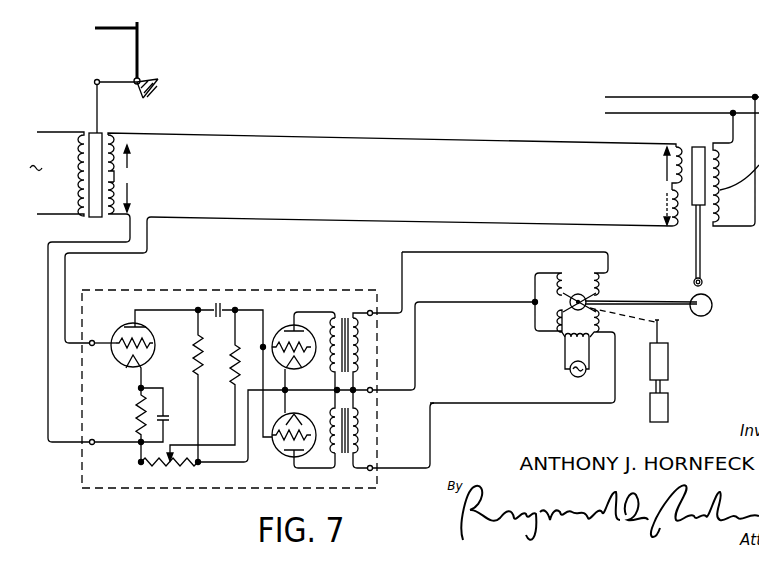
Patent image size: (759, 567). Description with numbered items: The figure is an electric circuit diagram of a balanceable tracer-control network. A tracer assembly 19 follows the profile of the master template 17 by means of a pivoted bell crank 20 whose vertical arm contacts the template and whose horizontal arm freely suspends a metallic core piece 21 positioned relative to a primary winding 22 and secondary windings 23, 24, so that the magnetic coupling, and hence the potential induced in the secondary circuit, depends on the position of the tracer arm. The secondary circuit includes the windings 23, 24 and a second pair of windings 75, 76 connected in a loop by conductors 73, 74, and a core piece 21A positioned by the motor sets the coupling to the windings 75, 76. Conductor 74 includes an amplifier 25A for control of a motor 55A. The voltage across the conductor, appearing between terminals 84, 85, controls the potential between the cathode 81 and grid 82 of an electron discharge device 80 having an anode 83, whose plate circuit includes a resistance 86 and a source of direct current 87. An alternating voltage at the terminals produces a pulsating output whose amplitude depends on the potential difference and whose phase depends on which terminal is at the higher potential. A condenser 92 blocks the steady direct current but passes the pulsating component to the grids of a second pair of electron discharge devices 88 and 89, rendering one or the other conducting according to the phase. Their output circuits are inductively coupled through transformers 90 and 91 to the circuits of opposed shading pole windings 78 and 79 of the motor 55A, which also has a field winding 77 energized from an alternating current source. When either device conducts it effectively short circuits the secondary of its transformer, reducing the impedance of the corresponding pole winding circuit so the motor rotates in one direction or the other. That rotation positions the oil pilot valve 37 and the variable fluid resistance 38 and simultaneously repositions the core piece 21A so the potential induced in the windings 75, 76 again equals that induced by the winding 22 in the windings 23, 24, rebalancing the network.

The master template 17 is at (120, 26).
The pivoted bell crank 20 is at (141, 47).
The tracer assembly 19 is at (69, 126).
The metallic core piece 21 is at (96, 217).
The primary winding 22 is at (73, 181).
The secondary winding 23 is at (126, 144).
The secondary winding 24 is at (124, 182).
The conductor 73 is at (297, 135).
The conductor 74 is at (297, 217).
The winding 75 is at (665, 150).
The winding 76 is at (668, 189).
The core piece 21A is at (695, 210).
The motor 55A is at (614, 296).
The shading pole winding 78 is at (568, 273).
The shading pole winding 79 is at (594, 273).
The field winding 77 is at (563, 345).
The oil pilot valve 37 is at (668, 360).
The variable fluid resistance 38 is at (668, 405).
The amplifier 25A is at (276, 292).
The electron discharge device 80 is at (140, 350).
The cathode 81 is at (136, 362).
The grid 82 is at (150, 340).
The anode 83 is at (134, 325).
The terminal 84 is at (92, 346).
The terminal 85 is at (93, 446).
The resistance 86 is at (204, 372).
The source of direct current 87 is at (198, 466).
The electron discharge device 88 is at (289, 458).
The electron discharge device 89 is at (289, 330).
The transformer 90 is at (343, 455).
The transformer 91 is at (346, 318).
The condenser 92 is at (220, 304).